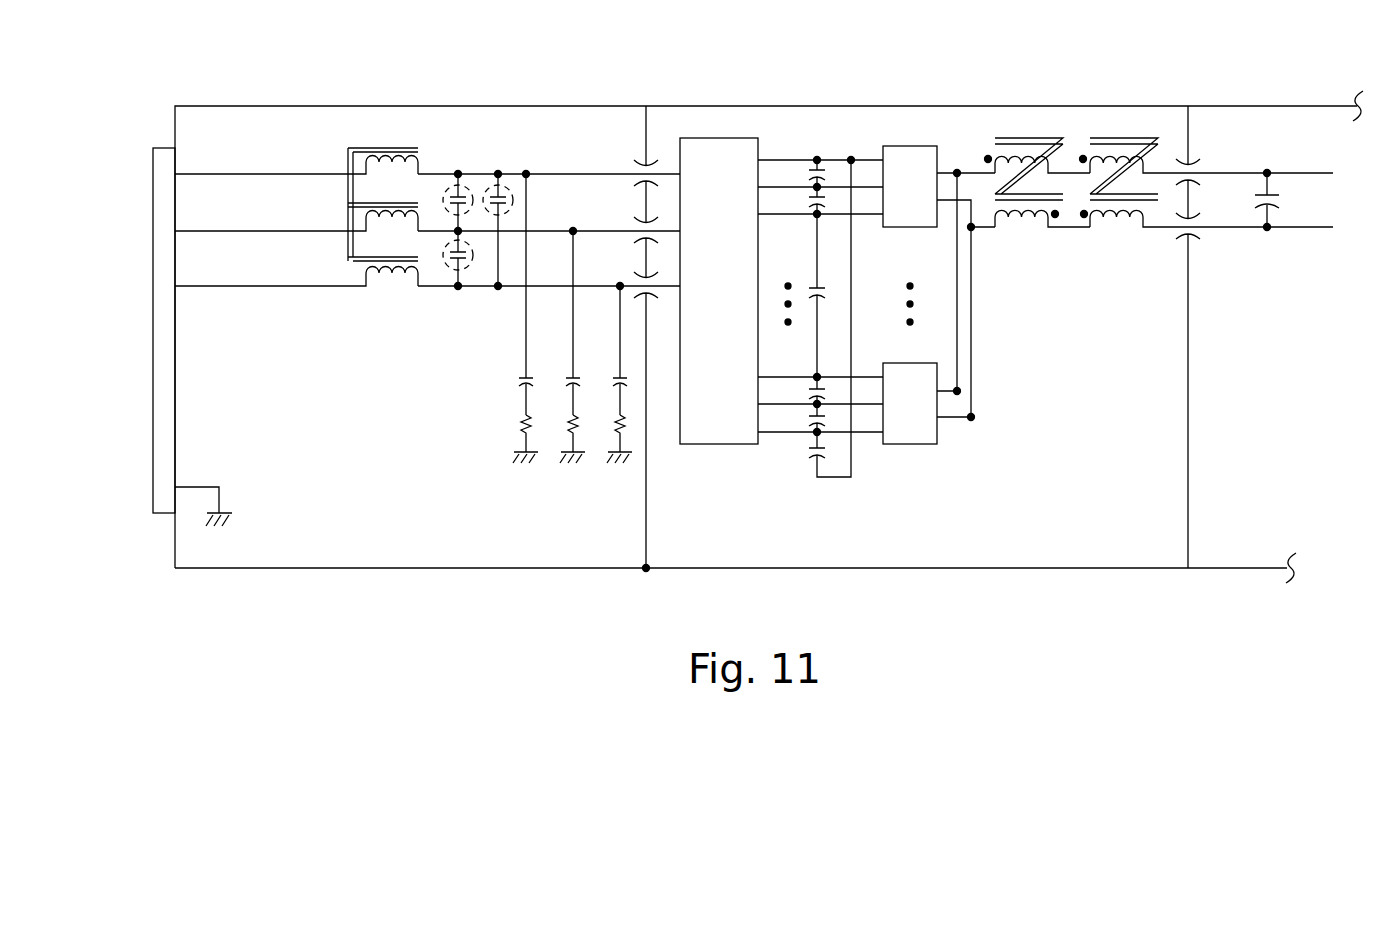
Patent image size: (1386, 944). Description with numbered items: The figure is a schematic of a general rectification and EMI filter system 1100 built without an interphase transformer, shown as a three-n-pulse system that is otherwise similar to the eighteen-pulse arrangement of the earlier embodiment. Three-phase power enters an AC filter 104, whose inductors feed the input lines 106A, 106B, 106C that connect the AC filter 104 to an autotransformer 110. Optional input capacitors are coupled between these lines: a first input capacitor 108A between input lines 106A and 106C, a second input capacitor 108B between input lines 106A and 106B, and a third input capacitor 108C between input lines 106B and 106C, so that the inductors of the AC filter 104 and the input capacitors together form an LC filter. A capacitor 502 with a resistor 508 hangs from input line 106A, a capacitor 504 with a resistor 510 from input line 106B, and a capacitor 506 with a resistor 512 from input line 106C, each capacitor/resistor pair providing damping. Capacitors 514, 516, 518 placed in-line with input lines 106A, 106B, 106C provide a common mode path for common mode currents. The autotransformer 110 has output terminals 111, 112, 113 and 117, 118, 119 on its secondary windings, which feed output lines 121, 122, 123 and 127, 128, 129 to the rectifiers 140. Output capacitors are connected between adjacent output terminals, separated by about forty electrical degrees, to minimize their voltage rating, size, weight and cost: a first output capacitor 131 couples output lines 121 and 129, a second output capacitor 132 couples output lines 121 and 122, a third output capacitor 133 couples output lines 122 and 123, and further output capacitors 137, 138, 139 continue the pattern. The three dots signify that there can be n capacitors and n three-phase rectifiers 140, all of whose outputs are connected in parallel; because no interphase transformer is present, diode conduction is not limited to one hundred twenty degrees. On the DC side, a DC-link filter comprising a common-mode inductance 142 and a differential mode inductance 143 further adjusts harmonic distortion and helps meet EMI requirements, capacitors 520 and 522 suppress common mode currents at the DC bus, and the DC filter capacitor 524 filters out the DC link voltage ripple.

The rectification and EMI filter system 1100 is at (134, 101).
The AC filter 104 is at (381, 298).
The input line 106A is at (557, 173).
The input line 106B is at (543, 230).
The input line 106C is at (583, 285).
The first input capacitor 108A is at (506, 188).
The second input capacitor 108B is at (451, 185).
The third input capacitor 108C is at (441, 264).
The autotransformer 110 is at (742, 272).
The output terminal 111 is at (797, 153).
The output terminal 112 is at (797, 179).
The output terminal 113 is at (797, 206).
The output terminal 117 is at (797, 370).
The output terminal 118 is at (797, 397).
The output terminal 119 is at (797, 425).
The output line 121 is at (820, 148).
The output line 122 is at (820, 175).
The output line 123 is at (820, 202).
The output line 127 is at (820, 365).
The output line 128 is at (820, 392).
The output line 129 is at (820, 420).
The first output capacitor 131 is at (811, 452).
The second output capacitor 132 is at (821, 170).
The third output capacitor 133 is at (821, 205).
The output capacitor 137 is at (814, 287).
The output capacitor 138 is at (822, 387).
The output capacitor 139 is at (823, 416).
The rectifier 140 is at (897, 228).
The common-mode inductance 142 is at (1118, 227).
The differential mode inductance 143 is at (1018, 229).
The capacitor 502 is at (524, 377).
The capacitor 504 is at (569, 380).
The capacitor 506 is at (617, 380).
The resistor 508 is at (524, 422).
The resistor 510 is at (570, 428).
The resistor 512 is at (618, 428).
The capacitor 514 is at (657, 164).
The capacitor 516 is at (654, 221).
The capacitor 518 is at (658, 277).
The capacitor 520 is at (1200, 162).
The capacitor 522 is at (1193, 233).
The DC filter capacitor 524 is at (1276, 195).